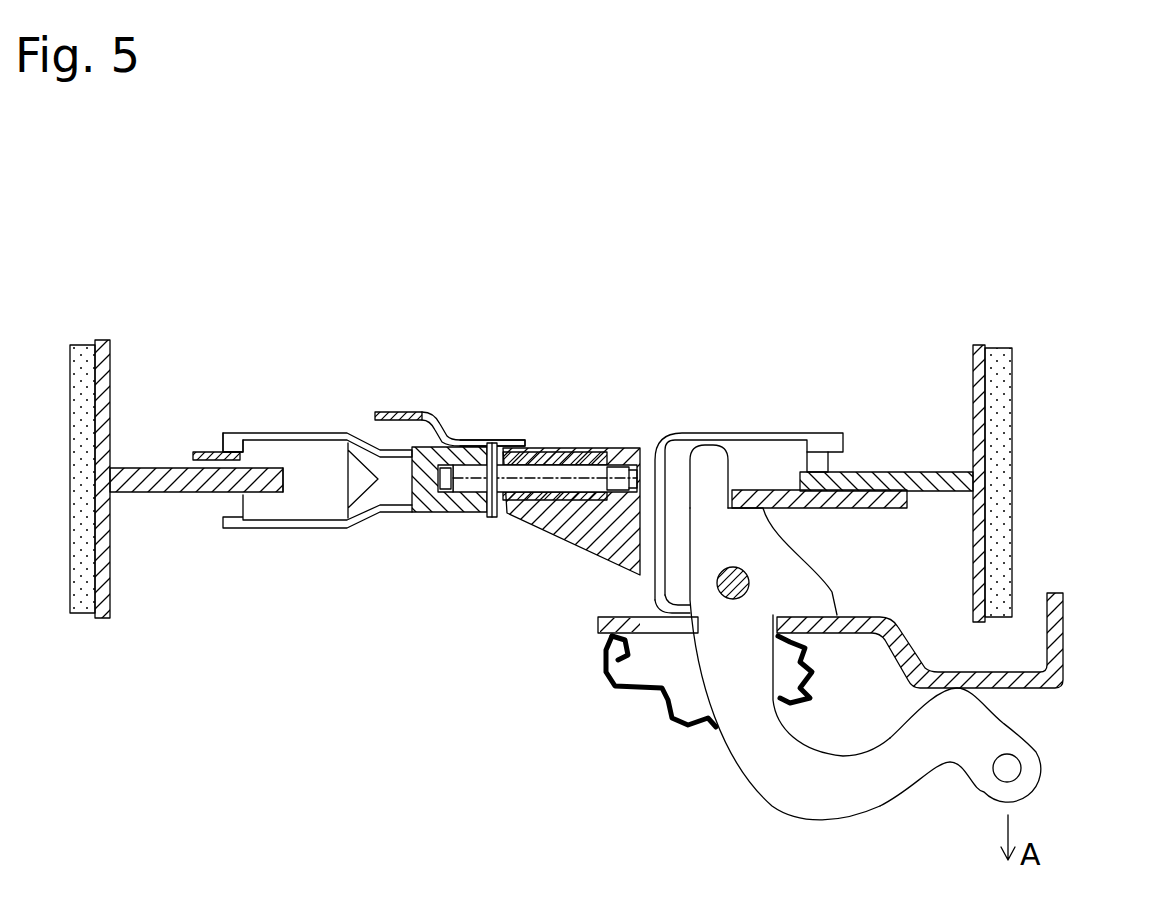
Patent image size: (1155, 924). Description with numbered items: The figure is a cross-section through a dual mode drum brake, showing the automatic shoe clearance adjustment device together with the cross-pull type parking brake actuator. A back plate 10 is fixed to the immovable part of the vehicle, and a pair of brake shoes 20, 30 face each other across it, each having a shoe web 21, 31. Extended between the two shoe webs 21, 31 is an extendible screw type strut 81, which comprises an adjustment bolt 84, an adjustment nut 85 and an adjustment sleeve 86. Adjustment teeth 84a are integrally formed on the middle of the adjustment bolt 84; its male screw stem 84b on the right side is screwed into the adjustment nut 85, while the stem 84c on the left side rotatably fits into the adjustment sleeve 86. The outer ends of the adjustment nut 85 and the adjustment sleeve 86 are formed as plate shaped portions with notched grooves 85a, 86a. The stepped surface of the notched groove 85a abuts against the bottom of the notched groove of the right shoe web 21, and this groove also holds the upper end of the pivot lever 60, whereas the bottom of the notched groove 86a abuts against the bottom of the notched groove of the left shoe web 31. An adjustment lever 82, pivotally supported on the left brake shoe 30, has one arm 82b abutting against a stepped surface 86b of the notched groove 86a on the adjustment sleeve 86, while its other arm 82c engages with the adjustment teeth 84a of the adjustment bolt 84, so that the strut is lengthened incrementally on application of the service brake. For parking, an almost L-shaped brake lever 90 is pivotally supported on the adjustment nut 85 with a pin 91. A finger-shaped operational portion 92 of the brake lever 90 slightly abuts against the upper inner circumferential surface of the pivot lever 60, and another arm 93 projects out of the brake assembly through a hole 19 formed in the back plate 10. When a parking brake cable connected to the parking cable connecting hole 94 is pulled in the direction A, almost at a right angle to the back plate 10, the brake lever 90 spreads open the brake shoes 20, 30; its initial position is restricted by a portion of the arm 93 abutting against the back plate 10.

The back plate 10 is at (1063, 640).
The hole 19 is at (640, 625).
The brake shoe 20 is at (1022, 338).
The shoe web 21 is at (915, 472).
The brake shoe 30 is at (82, 331).
The shoe web 31 is at (170, 492).
The pivot lever 60 is at (818, 508).
The strut 81 is at (630, 434).
The adjustment lever 82 is at (403, 398).
The arm 82b is at (197, 452).
The arm 82c is at (515, 445).
The adjustment bolt 84 is at (500, 495).
The adjustment teeth 84a is at (490, 515).
The male screw stem 84b is at (587, 460).
The stem 84c is at (470, 460).
The adjustment nut 85 is at (578, 555).
The notched groove 85a is at (807, 470).
The adjustment sleeve 86 is at (398, 505).
The notched groove 86a is at (272, 480).
The stepped surface 86b is at (215, 450).
The brake lever 90 is at (892, 609).
The pin 91 is at (750, 577).
The operational portion 92 is at (715, 455).
The arm 93 is at (1003, 723).
The parking cable connecting hole 94 is at (1010, 768).